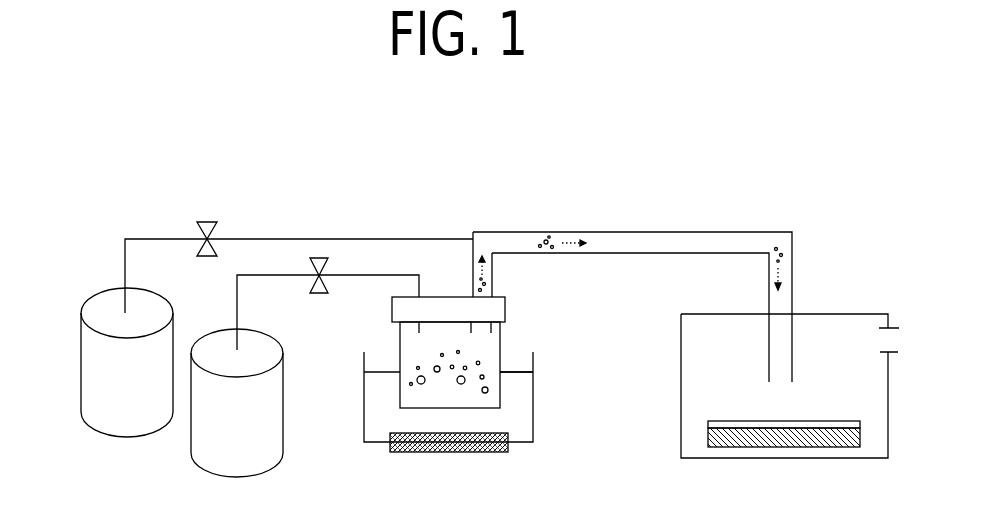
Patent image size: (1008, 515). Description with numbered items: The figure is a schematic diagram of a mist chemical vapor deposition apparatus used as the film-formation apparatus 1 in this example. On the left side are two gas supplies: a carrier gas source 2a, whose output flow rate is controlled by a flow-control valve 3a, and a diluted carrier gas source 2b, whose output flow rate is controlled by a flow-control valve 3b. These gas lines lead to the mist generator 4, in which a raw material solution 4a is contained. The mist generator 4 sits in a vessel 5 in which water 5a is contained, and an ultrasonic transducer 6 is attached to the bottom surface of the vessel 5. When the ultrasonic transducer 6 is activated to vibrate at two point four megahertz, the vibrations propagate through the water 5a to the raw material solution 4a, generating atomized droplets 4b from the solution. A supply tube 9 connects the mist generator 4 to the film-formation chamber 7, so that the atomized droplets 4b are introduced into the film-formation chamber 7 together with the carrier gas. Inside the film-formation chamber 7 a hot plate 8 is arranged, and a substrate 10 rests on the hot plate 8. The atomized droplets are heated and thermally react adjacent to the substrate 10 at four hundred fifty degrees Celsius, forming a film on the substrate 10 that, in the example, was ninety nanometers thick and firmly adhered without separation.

The film-formation apparatus 1 is at (274, 118).
The carrier gas source 2a is at (200, 451).
The diluted carrier gas source 2b is at (83, 377).
The flow-control valve 3a is at (318, 292).
The flow-control valve 3b is at (205, 222).
The mist generator 4 is at (395, 347).
The raw material solution 4a is at (398, 398).
The atomized droplets 4b is at (545, 236).
The vessel 5 is at (535, 408).
The water 5a is at (512, 372).
The ultrasonic transducer 6 is at (452, 453).
The film-formation chamber 7 is at (681, 432).
The hot plate 8 is at (840, 447).
The supply tube 9 is at (670, 232).
The substrate 10 is at (720, 420).